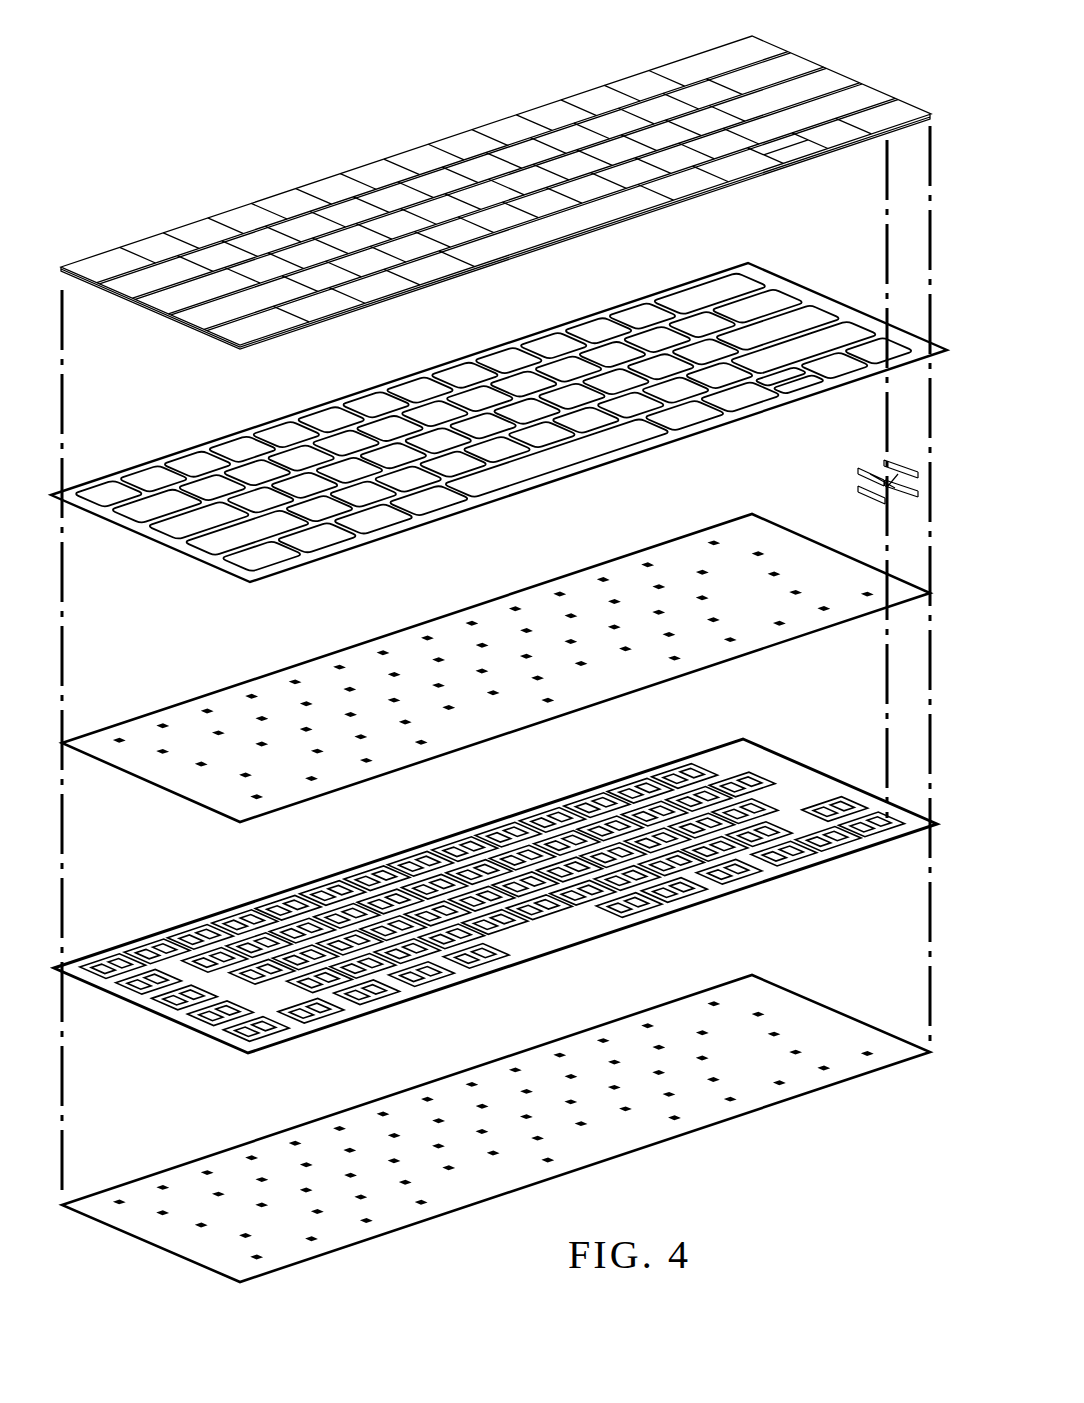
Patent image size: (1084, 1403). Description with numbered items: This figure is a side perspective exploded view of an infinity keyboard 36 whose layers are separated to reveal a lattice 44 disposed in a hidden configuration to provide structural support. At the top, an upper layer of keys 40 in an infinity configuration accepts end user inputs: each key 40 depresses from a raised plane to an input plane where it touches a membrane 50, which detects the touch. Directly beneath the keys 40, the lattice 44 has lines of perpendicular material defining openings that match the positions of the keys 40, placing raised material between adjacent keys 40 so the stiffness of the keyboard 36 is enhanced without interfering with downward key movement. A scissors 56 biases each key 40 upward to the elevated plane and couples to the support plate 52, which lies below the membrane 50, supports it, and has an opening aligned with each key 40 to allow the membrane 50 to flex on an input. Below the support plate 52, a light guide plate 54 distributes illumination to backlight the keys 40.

The infinity keyboard 36 is at (339, 84).
The keys 40 is at (250, 213).
The lattice 44 is at (203, 442).
The membrane 50 is at (346, 656).
The support plate 52 is at (413, 856).
The light guide plate 54 is at (478, 1071).
The scissors 56 is at (848, 465).